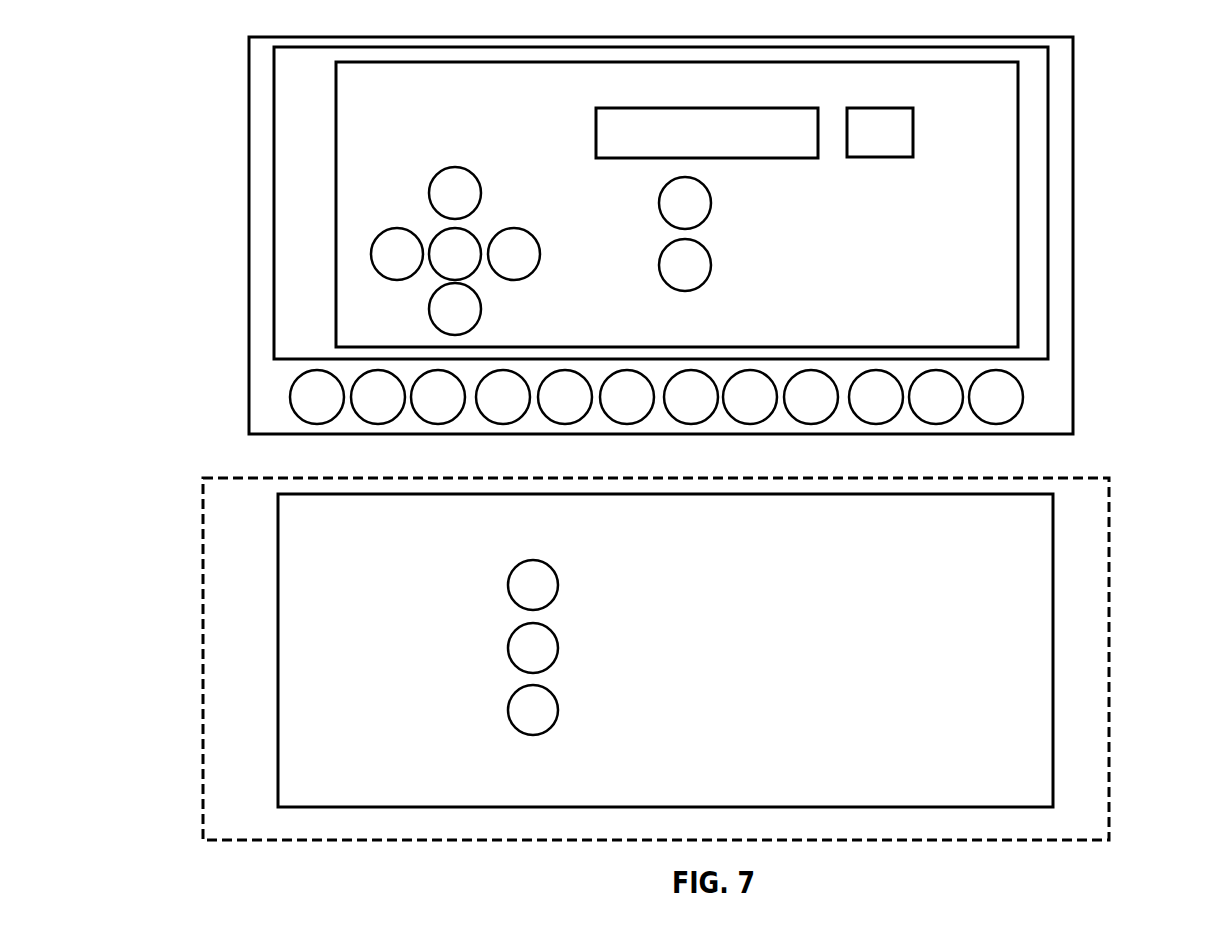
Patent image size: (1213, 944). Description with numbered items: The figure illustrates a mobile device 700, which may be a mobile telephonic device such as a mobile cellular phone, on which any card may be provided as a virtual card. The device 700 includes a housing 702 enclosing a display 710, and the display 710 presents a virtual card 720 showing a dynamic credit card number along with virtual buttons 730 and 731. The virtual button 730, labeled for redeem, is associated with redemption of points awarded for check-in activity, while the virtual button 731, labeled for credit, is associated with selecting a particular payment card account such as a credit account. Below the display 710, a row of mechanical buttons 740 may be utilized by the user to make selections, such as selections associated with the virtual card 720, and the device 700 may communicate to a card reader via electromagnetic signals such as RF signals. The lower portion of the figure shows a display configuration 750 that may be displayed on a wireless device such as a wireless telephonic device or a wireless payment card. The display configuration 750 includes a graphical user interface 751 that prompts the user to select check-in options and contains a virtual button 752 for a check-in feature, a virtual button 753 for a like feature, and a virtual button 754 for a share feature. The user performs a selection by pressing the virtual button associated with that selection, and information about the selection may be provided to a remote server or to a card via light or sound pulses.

The device 700 is at (1169, 447).
The housing 702 is at (250, 163).
The display 710 is at (276, 88).
The virtual card 720 is at (336, 255).
The virtual button 730 is at (661, 200).
The virtual button 731 is at (661, 263).
The mechanical buttons 740 is at (291, 392).
The display configuration 750 is at (203, 680).
The graphical user interface 751 is at (278, 537).
The virtual button 752 is at (509, 580).
The virtual button 753 is at (509, 643).
The virtual button 754 is at (509, 705).